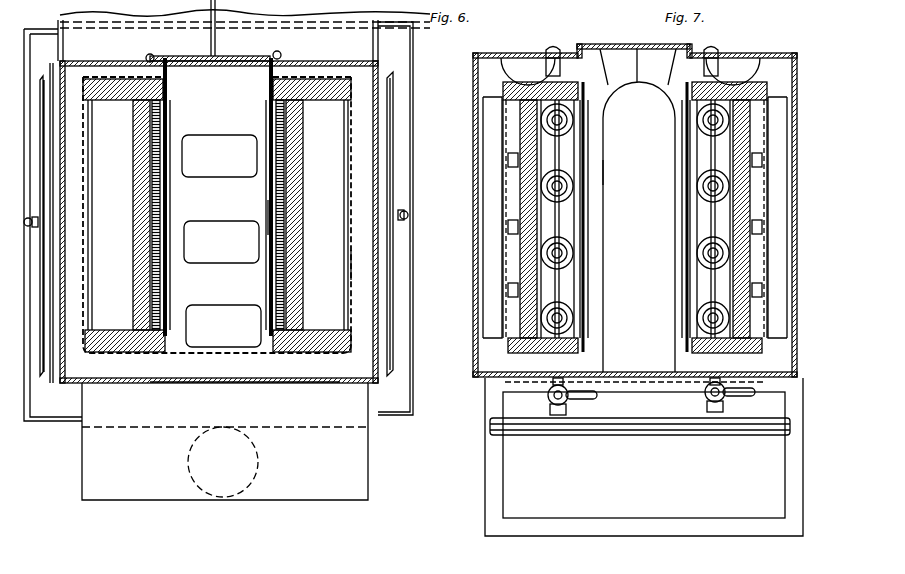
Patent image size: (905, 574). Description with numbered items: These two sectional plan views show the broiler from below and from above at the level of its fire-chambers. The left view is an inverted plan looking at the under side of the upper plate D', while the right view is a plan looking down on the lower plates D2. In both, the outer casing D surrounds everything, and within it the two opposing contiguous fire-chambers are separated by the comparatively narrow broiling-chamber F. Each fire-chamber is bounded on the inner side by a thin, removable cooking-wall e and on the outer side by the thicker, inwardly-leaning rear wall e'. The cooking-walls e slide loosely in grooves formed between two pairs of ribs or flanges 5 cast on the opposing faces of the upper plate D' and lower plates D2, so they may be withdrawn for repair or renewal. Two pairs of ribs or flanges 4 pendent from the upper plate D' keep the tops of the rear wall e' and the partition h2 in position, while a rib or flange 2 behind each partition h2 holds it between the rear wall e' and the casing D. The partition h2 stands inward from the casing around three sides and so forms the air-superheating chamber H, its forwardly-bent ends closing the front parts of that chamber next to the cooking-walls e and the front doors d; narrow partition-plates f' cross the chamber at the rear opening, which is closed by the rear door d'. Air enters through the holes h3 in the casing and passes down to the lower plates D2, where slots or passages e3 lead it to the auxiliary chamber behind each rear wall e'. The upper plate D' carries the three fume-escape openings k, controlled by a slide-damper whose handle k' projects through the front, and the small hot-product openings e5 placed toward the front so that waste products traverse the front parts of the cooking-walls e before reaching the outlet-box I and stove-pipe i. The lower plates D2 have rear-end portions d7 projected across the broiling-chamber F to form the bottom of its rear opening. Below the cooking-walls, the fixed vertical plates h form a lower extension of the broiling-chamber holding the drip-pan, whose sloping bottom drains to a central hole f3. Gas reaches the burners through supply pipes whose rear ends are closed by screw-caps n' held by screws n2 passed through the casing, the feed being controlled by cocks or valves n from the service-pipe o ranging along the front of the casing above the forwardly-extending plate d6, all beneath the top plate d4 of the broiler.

In FIG. 6, the casing D is at (234, 214).
In FIG. 6, the air-superheating chamber H is at (112, 62).
In FIG. 7, the air-superheating chamber H is at (506, 54).
In FIG. 6, the vertical wall or partition h2 is at (149, 55).
In FIG. 7, the vertical wall or partition h2 is at (494, 388).
In FIG. 6, the front door d is at (210, 48).
In FIG. 6, the damper stem or handle k' is at (202, 28).
In FIG. 6, the top plate d4 is at (218, 218).
In FIG. 6, the forwardly-extending plate d6 is at (40, 192).
In FIG. 7, the forwardly-extending plate d6 is at (644, 457).
In FIG. 6, the upper plate D' is at (217, 215).
In FIG. 6, the ribs or flanges 4 is at (92, 152).
In FIG. 6, the hot-product openings e5 is at (160, 122).
In FIG. 6, the cooking-wall e is at (234, 197).
In FIG. 7, the cooking-wall e is at (635, 216).
In FIG. 6, the ribs or flanges 5 is at (171, 184).
In FIG. 7, the ribs or flanges 5 is at (588, 194).
In FIG. 6, the fume-escape openings k is at (221, 241).
In FIG. 6, the rear wall e' is at (297, 217).
In FIG. 6, the vertical plate h is at (352, 258).
In FIG. 6, the air-inlet holes h3 is at (188, 384).
In FIG. 6, the outlet-box I is at (225, 441).
In FIG. 6, the stove-pipe i is at (223, 462).
In FIG. 7, the lower plate D2 is at (483, 78).
In FIG. 7, the screw-cap n' is at (635, 54).
In FIG. 7, the screw n2 is at (553, 48).
In FIG. 7, the rear door d' is at (634, 40).
In FIG. 7, the rear-end portion d7 is at (640, 84).
In FIG. 7, the partition-plate f' is at (630, 67).
In FIG. 7, the broiling-chamber F is at (639, 227).
In FIG. 7, the central hole f3 is at (672, 166).
In FIG. 7, the slots or passages e3 is at (508, 146).
In FIG. 7, the rib or flange 2 is at (508, 213).
In FIG. 7, the cock or valve n is at (648, 258).
In FIG. 7, the service-pipe o is at (550, 435).